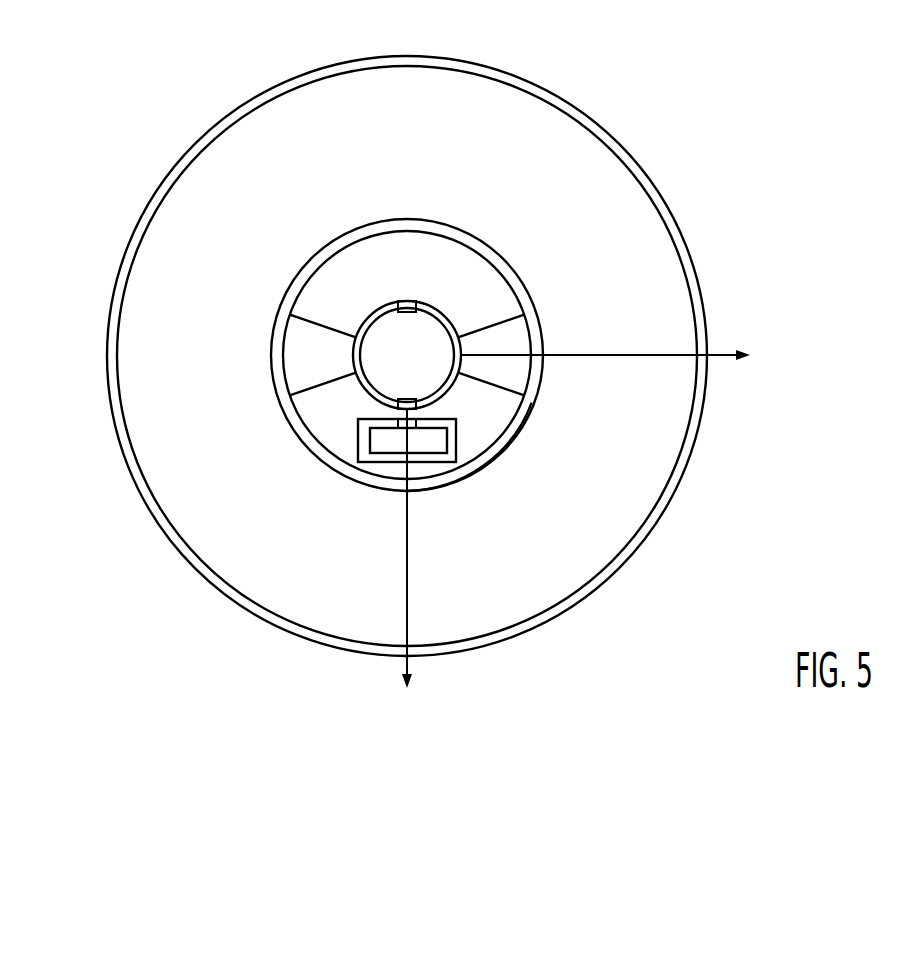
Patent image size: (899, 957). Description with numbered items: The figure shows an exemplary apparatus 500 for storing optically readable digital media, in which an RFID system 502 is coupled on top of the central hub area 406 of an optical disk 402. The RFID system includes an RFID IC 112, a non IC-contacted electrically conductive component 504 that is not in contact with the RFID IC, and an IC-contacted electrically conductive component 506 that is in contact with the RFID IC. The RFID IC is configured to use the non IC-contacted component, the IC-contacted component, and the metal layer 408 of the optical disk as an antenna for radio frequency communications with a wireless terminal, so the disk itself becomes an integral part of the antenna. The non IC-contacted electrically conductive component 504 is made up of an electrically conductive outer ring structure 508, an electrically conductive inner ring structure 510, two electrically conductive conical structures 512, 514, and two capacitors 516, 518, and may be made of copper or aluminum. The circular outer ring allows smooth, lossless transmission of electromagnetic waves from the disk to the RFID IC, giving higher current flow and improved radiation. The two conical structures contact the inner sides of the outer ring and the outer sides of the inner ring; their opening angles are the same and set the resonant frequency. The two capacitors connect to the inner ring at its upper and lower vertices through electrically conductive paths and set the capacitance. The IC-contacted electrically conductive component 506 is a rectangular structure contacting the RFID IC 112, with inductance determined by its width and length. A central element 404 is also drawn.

The apparatus 500 is at (608, 105).
The optical disk 402 is at (683, 229).
The metal layer 408 is at (653, 472).
The capacitor 516 is at (400, 219).
The RFID system 502 is at (543, 342).
The non IC-contacted electrically conductive component 504 is at (530, 444).
The central hub area 406 is at (500, 310).
The electrically conductive conical structure 514 is at (527, 350).
The electrically conductive conical structure 512 is at (332, 366).
The electrically conductive inner ring structure 510 is at (440, 310).
The central hub 404 is at (427, 368).
The electrically conductive outer ring structure 508 is at (403, 303).
The capacitor 518 is at (393, 403).
The IC-contacted electrically conductive component 506 is at (447, 465).
The RFID IC 112 is at (403, 427).